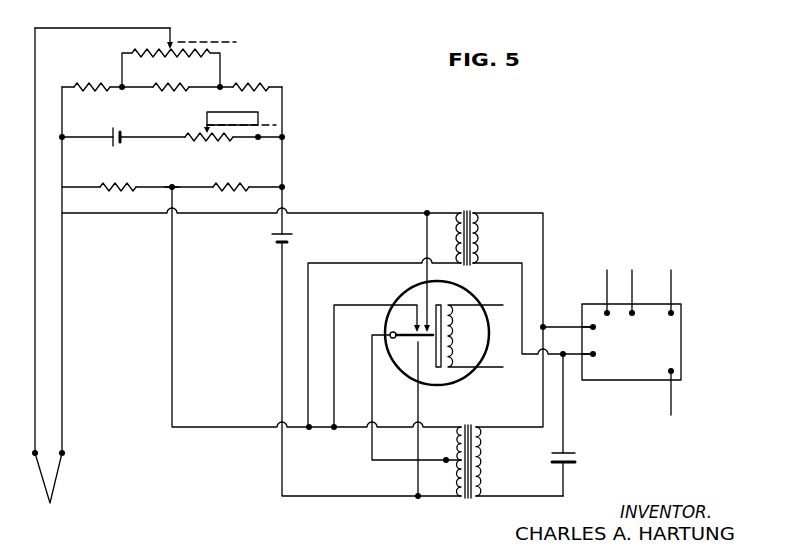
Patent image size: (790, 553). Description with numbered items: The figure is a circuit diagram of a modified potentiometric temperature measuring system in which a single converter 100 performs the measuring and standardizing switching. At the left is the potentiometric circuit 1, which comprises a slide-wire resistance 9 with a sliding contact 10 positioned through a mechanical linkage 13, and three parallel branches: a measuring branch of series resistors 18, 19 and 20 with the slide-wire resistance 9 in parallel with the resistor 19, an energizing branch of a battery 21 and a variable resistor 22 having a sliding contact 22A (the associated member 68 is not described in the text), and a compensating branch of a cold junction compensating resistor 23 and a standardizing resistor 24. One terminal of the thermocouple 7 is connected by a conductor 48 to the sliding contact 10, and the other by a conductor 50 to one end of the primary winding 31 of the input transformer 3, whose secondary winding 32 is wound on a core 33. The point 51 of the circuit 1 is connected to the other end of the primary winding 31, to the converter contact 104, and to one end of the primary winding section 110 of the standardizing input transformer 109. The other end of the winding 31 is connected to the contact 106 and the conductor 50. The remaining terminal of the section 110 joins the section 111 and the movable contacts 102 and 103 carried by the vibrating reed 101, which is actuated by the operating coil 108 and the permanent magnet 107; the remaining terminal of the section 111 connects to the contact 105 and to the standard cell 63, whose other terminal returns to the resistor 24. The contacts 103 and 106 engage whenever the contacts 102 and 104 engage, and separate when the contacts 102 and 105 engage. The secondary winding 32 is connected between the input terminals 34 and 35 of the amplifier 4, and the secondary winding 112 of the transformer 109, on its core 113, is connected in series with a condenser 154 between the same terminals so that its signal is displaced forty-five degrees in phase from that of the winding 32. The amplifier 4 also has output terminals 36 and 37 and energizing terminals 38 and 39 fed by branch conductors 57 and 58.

The potentiometric circuit 1 is at (316, 110).
The input transformer 3 is at (470, 204).
The electronic voltage amplifier 4 is at (632, 342).
The thermocouple 7 is at (56, 487).
The slide-wire resistance 9 is at (140, 49).
The sliding contact 10 is at (171, 41).
The mechanical linkage 13 is at (236, 42).
The resistor 18 is at (93, 70).
The resistor 19 is at (172, 86).
The resistor 20 is at (253, 84).
The battery 21 is at (113, 127).
The variable resistor 22 is at (203, 142).
The sliding contact 22A is at (207, 118).
The linkage 68 is at (276, 120).
The thermocouple cold junction compensating resistor 23 is at (117, 183).
The point 51 is at (173, 183).
The standardizing resistor 24 is at (230, 183).
The conductor 48 is at (38, 215).
The conductor 50 is at (211, 216).
The standard cell 63 is at (292, 237).
The primary winding 31 is at (452, 245).
The secondary winding 32 is at (485, 245).
The core 33 is at (470, 214).
The converter 100 is at (433, 354).
The vibrating reed 101 is at (373, 335).
The contact 102 is at (415, 350).
The moving contact 103 is at (412, 302).
The relatively stationary contact 104 is at (417, 333).
The relatively stationary contact 105 is at (420, 348).
The relatively stationary contact 106 is at (431, 294).
The permanent magnet 107 is at (455, 301).
The operating coil 108 is at (455, 333).
The standardizing input transformer 109 is at (452, 488).
The primary winding section 110 is at (455, 439).
The primary winding section 111 is at (455, 485).
The secondary winding 112 is at (487, 466).
The core 113 is at (470, 500).
The condenser 154 is at (576, 465).
The input terminal 34 is at (592, 325).
The input terminal 35 is at (593, 354).
The output terminal 36 is at (674, 313).
The output terminal 37 is at (671, 371).
The energizing terminal 38 is at (632, 313).
The energizing terminal 39 is at (607, 313).
The branch conductor 57 is at (632, 295).
The branch conductor 58 is at (607, 295).